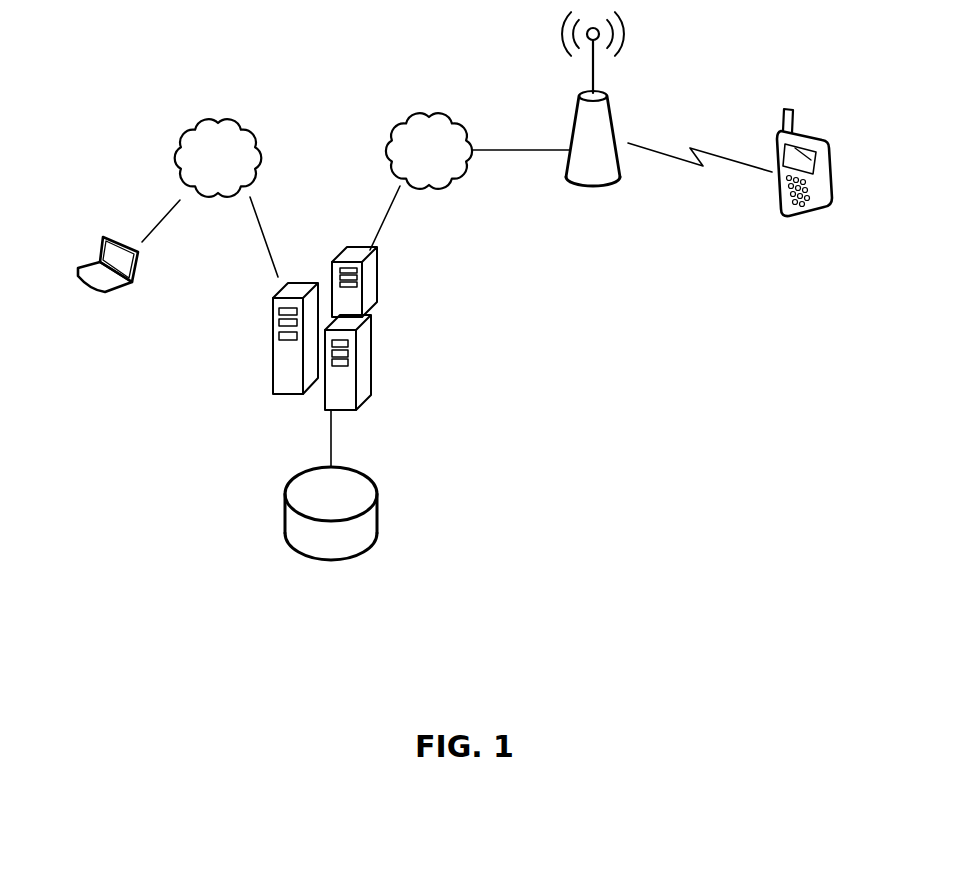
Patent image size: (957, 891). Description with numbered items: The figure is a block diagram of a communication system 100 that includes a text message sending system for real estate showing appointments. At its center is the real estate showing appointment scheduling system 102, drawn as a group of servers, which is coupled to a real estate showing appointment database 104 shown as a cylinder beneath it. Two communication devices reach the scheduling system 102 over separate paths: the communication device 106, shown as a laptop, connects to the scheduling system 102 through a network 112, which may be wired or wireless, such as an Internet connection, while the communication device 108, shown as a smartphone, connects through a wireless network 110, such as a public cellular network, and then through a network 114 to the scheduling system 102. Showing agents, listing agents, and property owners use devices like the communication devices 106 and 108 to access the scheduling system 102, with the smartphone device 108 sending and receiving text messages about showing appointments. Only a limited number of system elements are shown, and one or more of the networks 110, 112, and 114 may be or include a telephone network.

The communication system 100 is at (636, 380).
The real estate showing appointment scheduling system 102 is at (383, 308).
The real estate showing appointment database 104 is at (380, 530).
The communication device 106 is at (108, 300).
The communication device 108 is at (808, 215).
The wireless network 110 is at (605, 190).
The wired network 112 is at (246, 133).
The wired network 114 is at (383, 150).